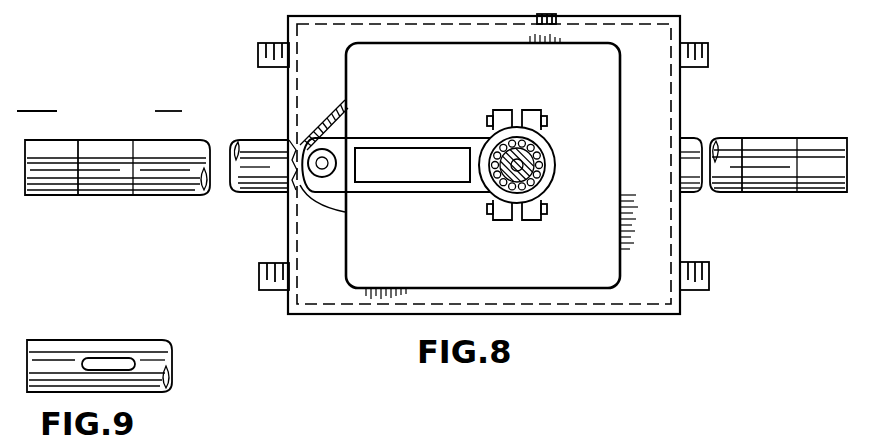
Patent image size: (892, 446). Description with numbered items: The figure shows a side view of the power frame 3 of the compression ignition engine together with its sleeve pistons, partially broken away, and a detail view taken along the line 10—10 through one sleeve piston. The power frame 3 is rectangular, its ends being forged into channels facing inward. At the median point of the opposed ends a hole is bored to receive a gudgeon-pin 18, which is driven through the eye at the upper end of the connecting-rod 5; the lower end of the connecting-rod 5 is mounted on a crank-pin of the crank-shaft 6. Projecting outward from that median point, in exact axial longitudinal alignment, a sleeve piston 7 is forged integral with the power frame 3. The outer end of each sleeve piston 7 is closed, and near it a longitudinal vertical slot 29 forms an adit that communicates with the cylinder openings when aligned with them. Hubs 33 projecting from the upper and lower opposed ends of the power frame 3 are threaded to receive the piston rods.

In FIG. 8, the power frame 3 is at (618, 88).
In FIG. 8, the connecting-rod 5 is at (445, 138).
In FIG. 8, the crank-shaft 6 is at (540, 156).
In FIG. 8, the sleeve piston 7 is at (157, 197).
In FIG. 9, the sleeve piston 7 is at (80, 340).
In FIG. 8, the section line 10 is at (42, 100).
In FIG. 8, the gudgeon-pin 18 is at (327, 160).
In FIG. 8, the longitudinal vertical slot 29 is at (126, 150).
In FIG. 9, the longitudinal vertical slot 29 is at (110, 362).
In FIG. 8, the hub 33 is at (258, 48).